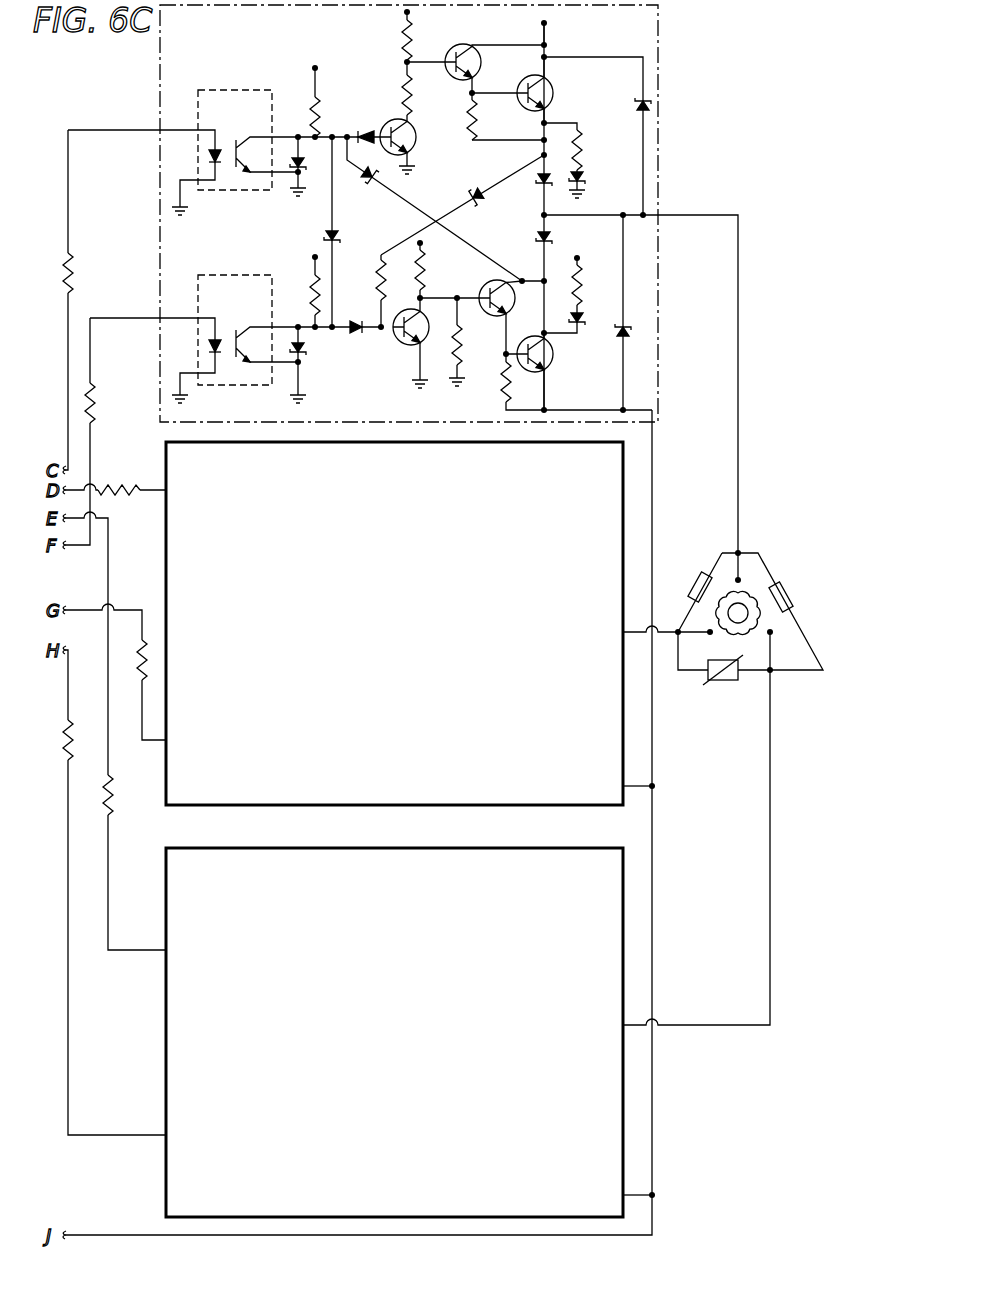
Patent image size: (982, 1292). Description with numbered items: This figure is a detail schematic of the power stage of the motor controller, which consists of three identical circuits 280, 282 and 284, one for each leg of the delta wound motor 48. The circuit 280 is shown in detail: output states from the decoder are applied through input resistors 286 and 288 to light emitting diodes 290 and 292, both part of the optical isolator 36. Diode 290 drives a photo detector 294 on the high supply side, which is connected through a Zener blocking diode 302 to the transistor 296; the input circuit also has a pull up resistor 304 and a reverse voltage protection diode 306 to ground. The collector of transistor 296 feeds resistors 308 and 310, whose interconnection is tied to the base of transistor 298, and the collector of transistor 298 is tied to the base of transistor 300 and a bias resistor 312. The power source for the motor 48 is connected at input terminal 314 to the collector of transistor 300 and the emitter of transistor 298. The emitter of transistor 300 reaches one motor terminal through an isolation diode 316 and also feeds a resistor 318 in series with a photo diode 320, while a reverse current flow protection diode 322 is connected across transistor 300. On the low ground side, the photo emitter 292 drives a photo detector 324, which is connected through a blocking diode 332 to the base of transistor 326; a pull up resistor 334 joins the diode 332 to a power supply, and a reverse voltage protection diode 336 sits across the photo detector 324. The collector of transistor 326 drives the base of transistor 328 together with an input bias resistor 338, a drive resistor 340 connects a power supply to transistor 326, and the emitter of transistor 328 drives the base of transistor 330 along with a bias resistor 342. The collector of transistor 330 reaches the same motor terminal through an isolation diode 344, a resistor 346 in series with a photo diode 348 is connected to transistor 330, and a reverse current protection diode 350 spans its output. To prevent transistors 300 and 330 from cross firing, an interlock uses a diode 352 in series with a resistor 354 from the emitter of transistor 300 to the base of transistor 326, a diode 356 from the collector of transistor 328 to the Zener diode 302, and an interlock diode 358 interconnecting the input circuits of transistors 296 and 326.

The optical isolator 36 is at (242, 90).
The delta wound motor 48 is at (752, 546).
The power stage circuit 280 is at (660, 188).
The power stage circuit 282 is at (407, 637).
The power stage circuit 284 is at (407, 1040).
The input resistor 286 is at (75, 265).
The input resistor 288 is at (93, 393).
The light emitting diode 290 is at (216, 148).
The light emitting diode 292 is at (217, 335).
The photo detector 294 is at (239, 167).
The transistor 296 is at (406, 148).
The transistor 298 is at (470, 45).
The transistor 300 is at (554, 80).
The Zener blocking diode 302 is at (360, 130).
The pull up resistor 304 is at (318, 103).
The reverse voltage protection diode 306 is at (303, 166).
The resistor 308 is at (399, 33).
The resistor 310 is at (412, 92).
The bias resistor 312 is at (470, 121).
The input terminal 314 is at (545, 23).
The isolation diode 316 is at (539, 176).
The resistor 318 is at (578, 130).
The photo diode 320 is at (582, 180).
The reverse current flow protection diode 322 is at (634, 111).
The photo detector 324 is at (242, 365).
The transistor 326 is at (415, 345).
The transistor 328 is at (480, 287).
The transistor 330 is at (546, 362).
The blocking diode 332 is at (358, 334).
The pull up resistor 334 is at (310, 276).
The reverse voltage protection diode 336 is at (306, 352).
The input bias resistor 338 is at (462, 331).
The drive resistor 340 is at (423, 267).
The bias resistor 342 is at (503, 376).
The isolation diode 344 is at (542, 235).
The resistor 346 is at (580, 266).
The photo diode 348 is at (582, 326).
The reverse current protection diode 350 is at (616, 328).
The diode 352 is at (474, 194).
The resistor 354 is at (377, 267).
The diode 356 is at (372, 182).
The interlock diode 358 is at (325, 235).